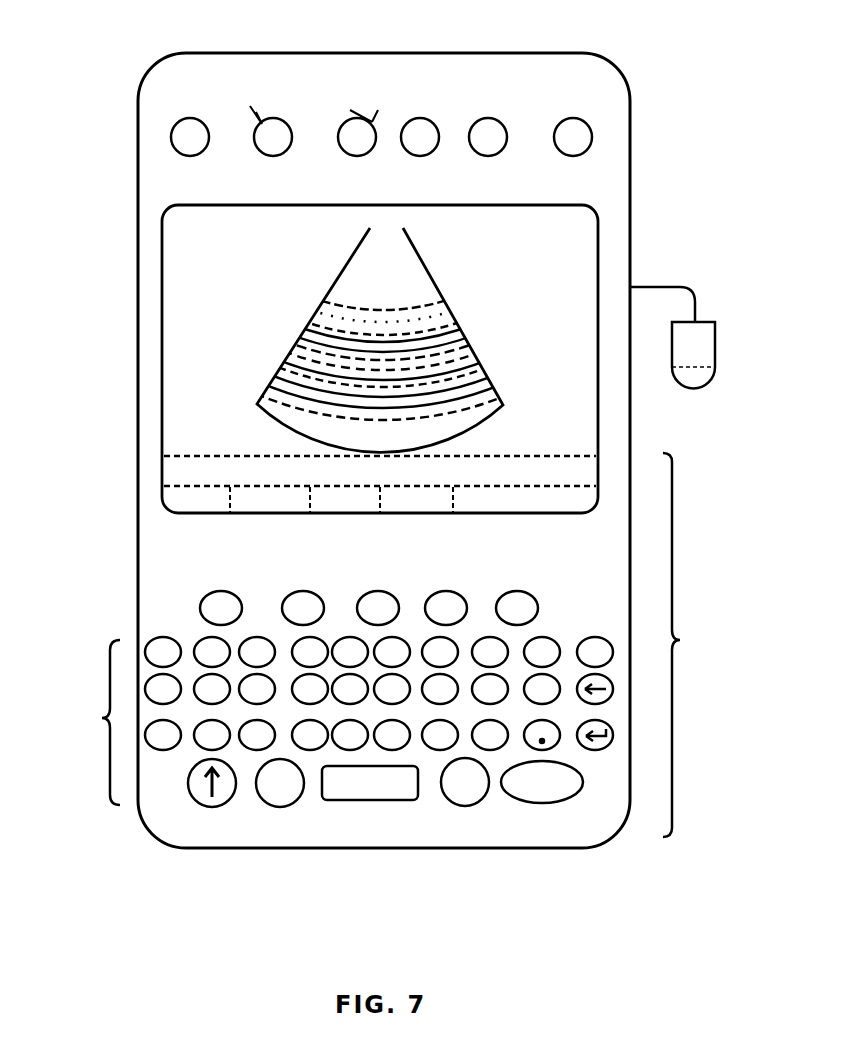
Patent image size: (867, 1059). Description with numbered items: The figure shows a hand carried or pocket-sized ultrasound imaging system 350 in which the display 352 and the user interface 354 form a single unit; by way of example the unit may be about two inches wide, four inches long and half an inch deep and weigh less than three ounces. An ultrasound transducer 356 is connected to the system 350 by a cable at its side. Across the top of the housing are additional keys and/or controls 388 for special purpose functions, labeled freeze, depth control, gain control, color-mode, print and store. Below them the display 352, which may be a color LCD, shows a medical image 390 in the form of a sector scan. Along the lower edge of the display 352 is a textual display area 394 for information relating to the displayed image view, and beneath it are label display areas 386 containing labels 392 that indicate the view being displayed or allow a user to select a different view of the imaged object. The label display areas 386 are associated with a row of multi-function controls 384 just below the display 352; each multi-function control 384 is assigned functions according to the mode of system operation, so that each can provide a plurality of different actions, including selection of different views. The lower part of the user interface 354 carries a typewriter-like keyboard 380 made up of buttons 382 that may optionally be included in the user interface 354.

The pocket-sized ultrasound imaging system 350 is at (154, 52).
The display 352 is at (598, 250).
The user interface 354 is at (680, 640).
The ultrasound transducer 356 is at (707, 322).
The keyboard 380 is at (102, 718).
The buttons 382 is at (165, 636).
The multi-function controls 384 is at (226, 591).
The label display areas 386 is at (171, 478).
The additional keys and/or controls 388 is at (195, 118).
The medical image 390 is at (317, 307).
The labels 392 is at (214, 485).
The textual display area 394 is at (240, 448).